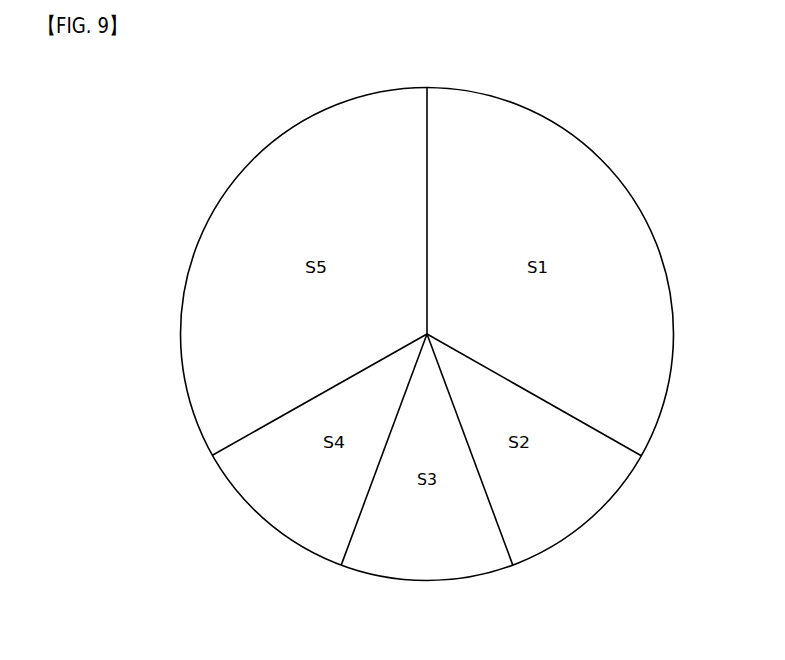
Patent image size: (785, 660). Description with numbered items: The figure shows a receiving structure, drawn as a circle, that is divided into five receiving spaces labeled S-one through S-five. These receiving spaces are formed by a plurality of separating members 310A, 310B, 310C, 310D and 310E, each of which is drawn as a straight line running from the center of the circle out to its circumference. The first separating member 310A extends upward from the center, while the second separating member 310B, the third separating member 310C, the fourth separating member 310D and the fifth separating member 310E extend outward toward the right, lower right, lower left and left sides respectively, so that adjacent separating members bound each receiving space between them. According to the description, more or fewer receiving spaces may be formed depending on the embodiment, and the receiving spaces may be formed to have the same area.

The separating member 310A is at (427, 125).
The separating member 310B is at (590, 424).
The separating member 310C is at (500, 529).
The separating member 310D is at (354, 531).
The separating member 310E is at (252, 437).